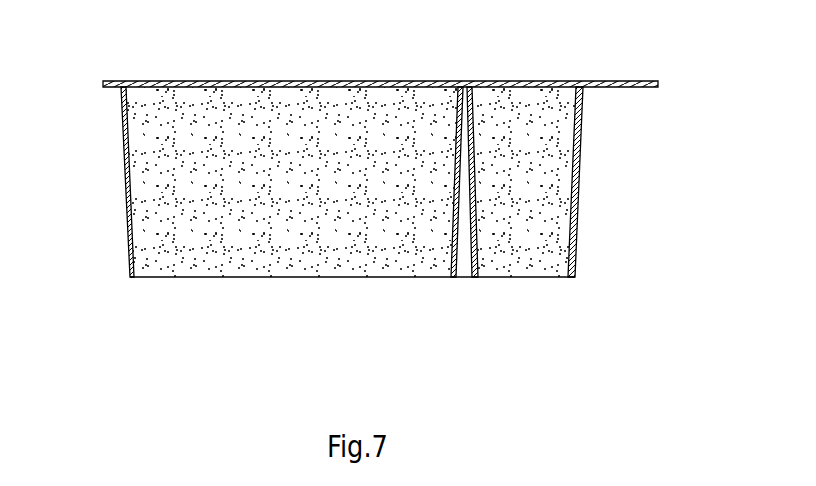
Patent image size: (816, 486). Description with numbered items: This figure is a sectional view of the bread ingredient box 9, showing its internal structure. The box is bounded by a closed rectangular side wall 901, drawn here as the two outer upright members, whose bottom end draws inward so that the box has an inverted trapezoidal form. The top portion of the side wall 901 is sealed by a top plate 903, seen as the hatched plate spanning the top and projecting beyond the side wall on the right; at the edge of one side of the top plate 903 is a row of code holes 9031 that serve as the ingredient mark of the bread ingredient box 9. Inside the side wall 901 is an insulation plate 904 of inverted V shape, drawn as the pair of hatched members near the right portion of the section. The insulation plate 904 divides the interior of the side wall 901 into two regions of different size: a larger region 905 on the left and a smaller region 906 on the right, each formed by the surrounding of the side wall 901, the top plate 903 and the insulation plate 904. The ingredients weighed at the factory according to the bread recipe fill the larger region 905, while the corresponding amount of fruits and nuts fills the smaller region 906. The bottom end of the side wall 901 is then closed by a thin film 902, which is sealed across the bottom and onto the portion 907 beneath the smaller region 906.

The bread ingredient box 9 is at (88, 73).
The side wall 901 is at (172, 213).
The thin film 902 is at (355, 280).
The top plate 903 is at (262, 82).
The code holes 9031 is at (622, 82).
The insulation plate 904 is at (453, 223).
The larger region 905 is at (212, 257).
The smaller region 906 is at (540, 228).
The portion of the smaller region 907 is at (508, 277).